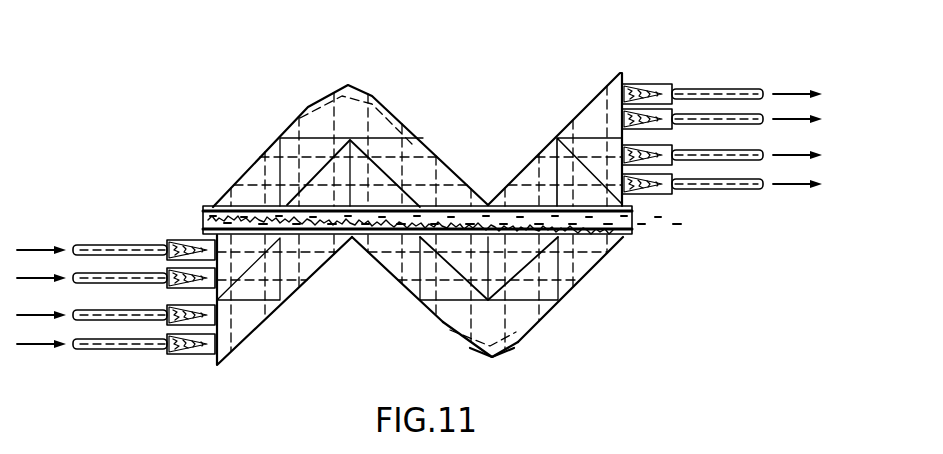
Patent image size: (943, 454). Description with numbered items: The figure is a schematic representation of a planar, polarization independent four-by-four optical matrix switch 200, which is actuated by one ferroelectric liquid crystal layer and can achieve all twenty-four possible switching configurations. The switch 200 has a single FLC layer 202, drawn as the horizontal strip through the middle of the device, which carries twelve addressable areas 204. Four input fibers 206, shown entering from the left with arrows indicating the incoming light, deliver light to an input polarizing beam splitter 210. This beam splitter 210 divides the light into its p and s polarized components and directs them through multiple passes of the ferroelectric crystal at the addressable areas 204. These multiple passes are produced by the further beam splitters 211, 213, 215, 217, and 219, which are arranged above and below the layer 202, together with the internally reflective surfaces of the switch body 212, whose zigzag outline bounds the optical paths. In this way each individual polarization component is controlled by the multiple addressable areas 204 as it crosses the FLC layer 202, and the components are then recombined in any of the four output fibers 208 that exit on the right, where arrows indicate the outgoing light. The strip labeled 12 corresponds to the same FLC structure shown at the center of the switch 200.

The 4×4 optical matrix switch 200 is at (447, 98).
The heat transfer strip / membrane 12 is at (632, 223).
The FLC layer 202 is at (635, 232).
The addressable areas 204 is at (592, 237).
The input fibers 206 is at (119, 352).
The output fibers 208 is at (708, 85).
The input polarizing beam splitter 210 is at (255, 290).
The beam splitter 211 is at (290, 147).
The switch body 212 is at (445, 327).
The beam splitter 213 is at (433, 153).
The beam splitter 215 is at (403, 293).
The beam splitter 217 is at (533, 292).
The beam splitter 219 is at (550, 142).